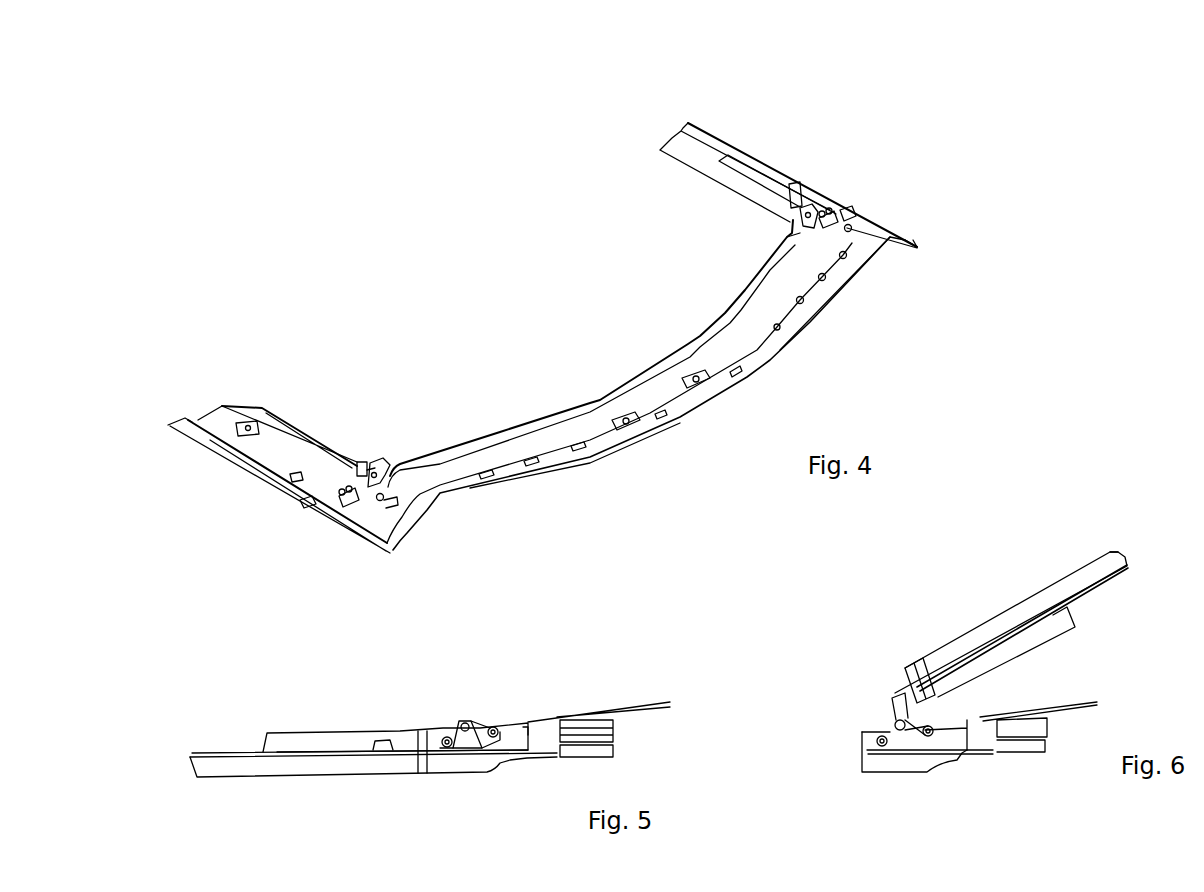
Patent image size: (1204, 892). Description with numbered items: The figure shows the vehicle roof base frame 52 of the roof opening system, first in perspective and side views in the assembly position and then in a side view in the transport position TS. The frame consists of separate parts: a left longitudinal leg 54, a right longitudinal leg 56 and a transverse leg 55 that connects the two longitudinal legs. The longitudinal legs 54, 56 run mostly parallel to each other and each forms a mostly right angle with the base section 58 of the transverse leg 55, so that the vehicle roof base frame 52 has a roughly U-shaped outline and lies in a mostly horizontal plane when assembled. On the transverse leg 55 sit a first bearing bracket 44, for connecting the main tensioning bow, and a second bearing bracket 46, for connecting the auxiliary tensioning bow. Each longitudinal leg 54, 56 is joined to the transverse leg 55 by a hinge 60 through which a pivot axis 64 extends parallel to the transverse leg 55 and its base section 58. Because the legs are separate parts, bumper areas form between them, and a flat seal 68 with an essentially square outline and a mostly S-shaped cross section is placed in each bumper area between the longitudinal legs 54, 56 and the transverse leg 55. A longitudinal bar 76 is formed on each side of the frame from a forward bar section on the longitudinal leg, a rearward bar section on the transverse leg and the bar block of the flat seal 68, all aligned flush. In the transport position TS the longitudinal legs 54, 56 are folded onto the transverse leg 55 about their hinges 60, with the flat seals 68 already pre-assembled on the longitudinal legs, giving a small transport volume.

In FIG. 4, the first bearing bracket 44 is at (830, 213).
In FIG. 4, the second bearing bracket 46 is at (907, 245).
In FIG. 4, the vehicle roof base frame 52 is at (857, 207).
In FIG. 4, the left longitudinal leg 54 is at (268, 485).
In FIG. 5, the left longitudinal leg 54 is at (278, 777).
In FIG. 6, the left longitudinal leg 54 is at (1007, 610).
In FIG. 4, the transverse leg 55 is at (833, 296).
In FIG. 5, the transverse leg 55 is at (503, 762).
In FIG. 6, the transverse leg 55 is at (973, 757).
In FIG. 4, the right longitudinal leg 56 is at (750, 157).
In FIG. 4, the base section 58 is at (693, 414).
In FIG. 4, the hinge 60 is at (383, 460).
In FIG. 5, the hinge 60 is at (465, 715).
In FIG. 6, the hinge 60 is at (895, 715).
In FIG. 4, the pivot axis 64 is at (787, 237).
In FIG. 4, the flat seal 68 is at (835, 197).
In FIG. 5, the flat seal 68 is at (420, 775).
In FIG. 6, the flat seal 68 is at (913, 660).
In FIG. 4, the longitudinal bar 76 is at (238, 469).
In FIG. 6, the transport position TS is at (1108, 555).